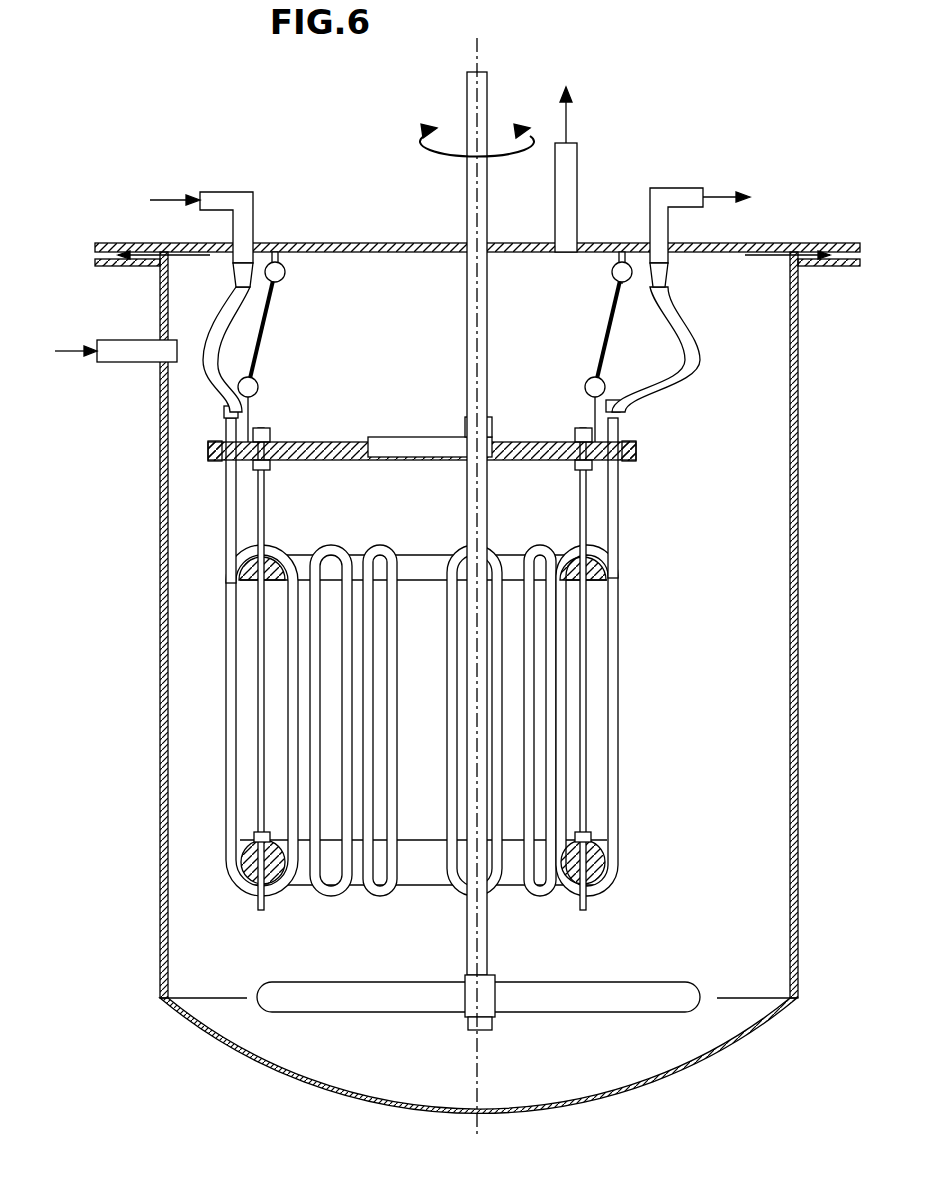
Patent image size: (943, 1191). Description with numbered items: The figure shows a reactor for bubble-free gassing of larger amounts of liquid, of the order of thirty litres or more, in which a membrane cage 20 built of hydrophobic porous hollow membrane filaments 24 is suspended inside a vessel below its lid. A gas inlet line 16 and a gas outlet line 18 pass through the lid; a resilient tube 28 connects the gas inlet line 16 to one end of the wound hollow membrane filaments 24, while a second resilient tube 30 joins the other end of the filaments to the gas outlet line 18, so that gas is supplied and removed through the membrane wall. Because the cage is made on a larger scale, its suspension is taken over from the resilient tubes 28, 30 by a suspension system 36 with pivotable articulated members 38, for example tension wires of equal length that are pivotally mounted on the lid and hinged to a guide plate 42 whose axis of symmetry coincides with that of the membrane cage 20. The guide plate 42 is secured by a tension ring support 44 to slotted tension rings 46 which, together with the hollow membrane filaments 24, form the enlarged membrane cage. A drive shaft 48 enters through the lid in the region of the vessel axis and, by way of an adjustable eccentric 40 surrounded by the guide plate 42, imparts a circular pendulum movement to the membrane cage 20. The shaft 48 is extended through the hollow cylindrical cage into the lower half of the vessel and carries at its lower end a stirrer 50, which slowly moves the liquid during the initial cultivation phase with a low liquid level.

The gas inlet line 16 is at (215, 203).
The gas outlet line 18 is at (690, 196).
The membrane cage 20 is at (522, 533).
The hollow membrane filaments 24 is at (618, 620).
The resilient tube 28 is at (227, 317).
The resilient tube 30 is at (655, 326).
The suspension system 36 is at (596, 288).
The articulated members 38 is at (265, 332).
The eccentric 40 is at (392, 445).
The guide plate 42 is at (638, 450).
The tension ring support 44 is at (596, 717).
The slotted tension rings 46 is at (245, 584).
The drive shaft 48 is at (470, 512).
The stirrer 50 is at (388, 1000).